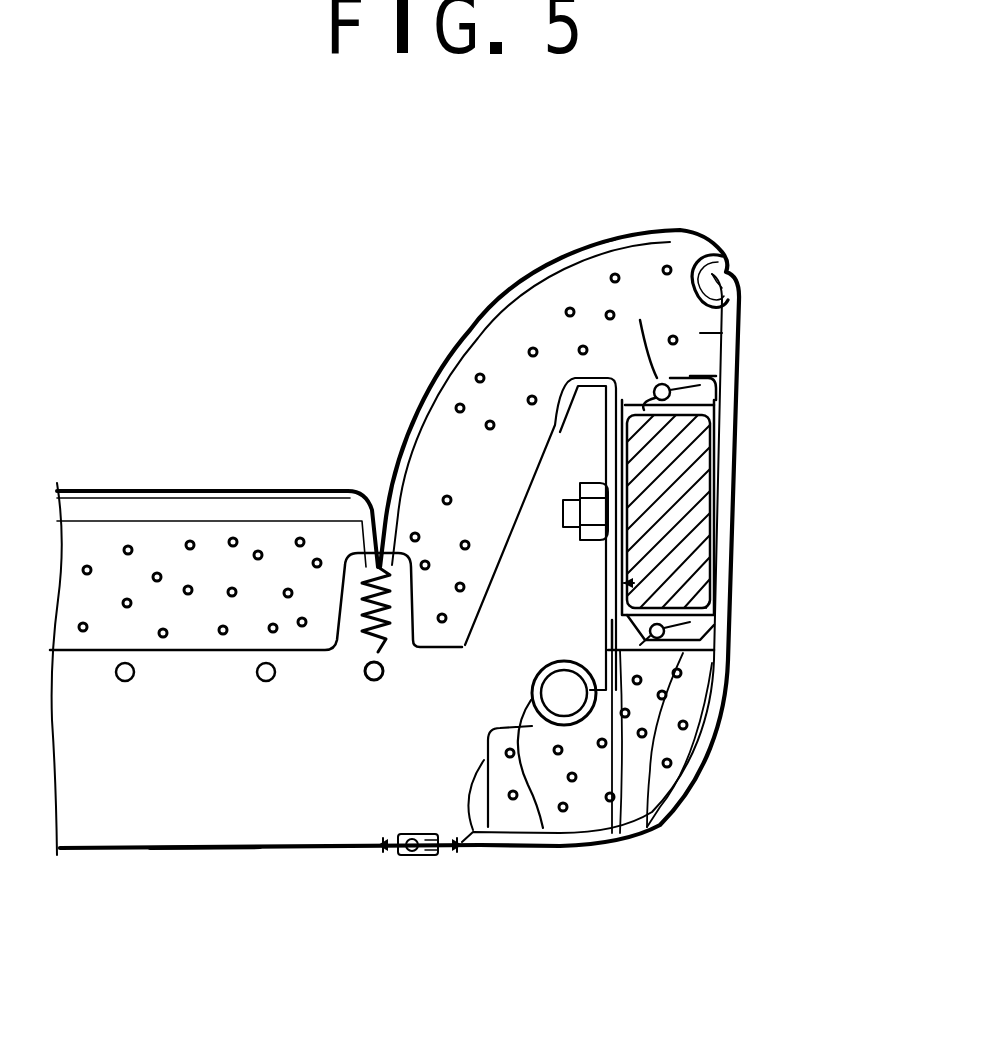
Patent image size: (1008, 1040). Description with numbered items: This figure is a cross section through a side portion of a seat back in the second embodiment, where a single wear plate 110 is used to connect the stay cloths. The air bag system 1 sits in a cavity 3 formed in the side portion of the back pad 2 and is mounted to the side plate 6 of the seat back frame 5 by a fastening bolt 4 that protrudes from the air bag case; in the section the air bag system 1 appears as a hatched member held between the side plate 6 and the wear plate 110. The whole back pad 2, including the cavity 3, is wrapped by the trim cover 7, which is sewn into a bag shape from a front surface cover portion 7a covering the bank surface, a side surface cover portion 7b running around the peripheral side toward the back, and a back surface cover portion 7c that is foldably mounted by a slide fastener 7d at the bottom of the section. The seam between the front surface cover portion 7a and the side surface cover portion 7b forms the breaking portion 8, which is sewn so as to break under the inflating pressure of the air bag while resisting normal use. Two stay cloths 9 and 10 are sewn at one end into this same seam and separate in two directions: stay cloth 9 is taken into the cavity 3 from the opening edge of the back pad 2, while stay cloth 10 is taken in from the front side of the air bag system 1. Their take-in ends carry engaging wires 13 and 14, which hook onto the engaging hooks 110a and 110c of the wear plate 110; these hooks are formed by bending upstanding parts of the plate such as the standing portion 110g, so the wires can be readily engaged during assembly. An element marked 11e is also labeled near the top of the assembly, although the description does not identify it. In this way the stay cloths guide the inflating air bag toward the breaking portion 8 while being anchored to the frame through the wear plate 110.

The air bag system 1 is at (708, 495).
The back pad 2 is at (487, 850).
The cavity 3 is at (718, 650).
The fastening bolt 4 is at (563, 513).
The seat back frame 5 is at (543, 853).
The side plate 6 is at (605, 440).
The trim cover 7 is at (486, 290).
The front surface cover portion 7a is at (581, 248).
The side surface cover portion 7b is at (740, 312).
The back surface cover portion 7c is at (190, 850).
The slide fastener 7d is at (422, 858).
The breaking portion 8 is at (730, 262).
The stay cloth 9 is at (722, 333).
The stay cloth 10 is at (718, 558).
The pad portion 11e is at (640, 320).
The engaging wire 13 is at (661, 383).
The engaging wire 14 is at (655, 813).
The wear plate 110 is at (716, 613).
The engaging hook 110a is at (722, 376).
The engaging hook 110c is at (698, 722).
The standing portion 110g is at (617, 833).